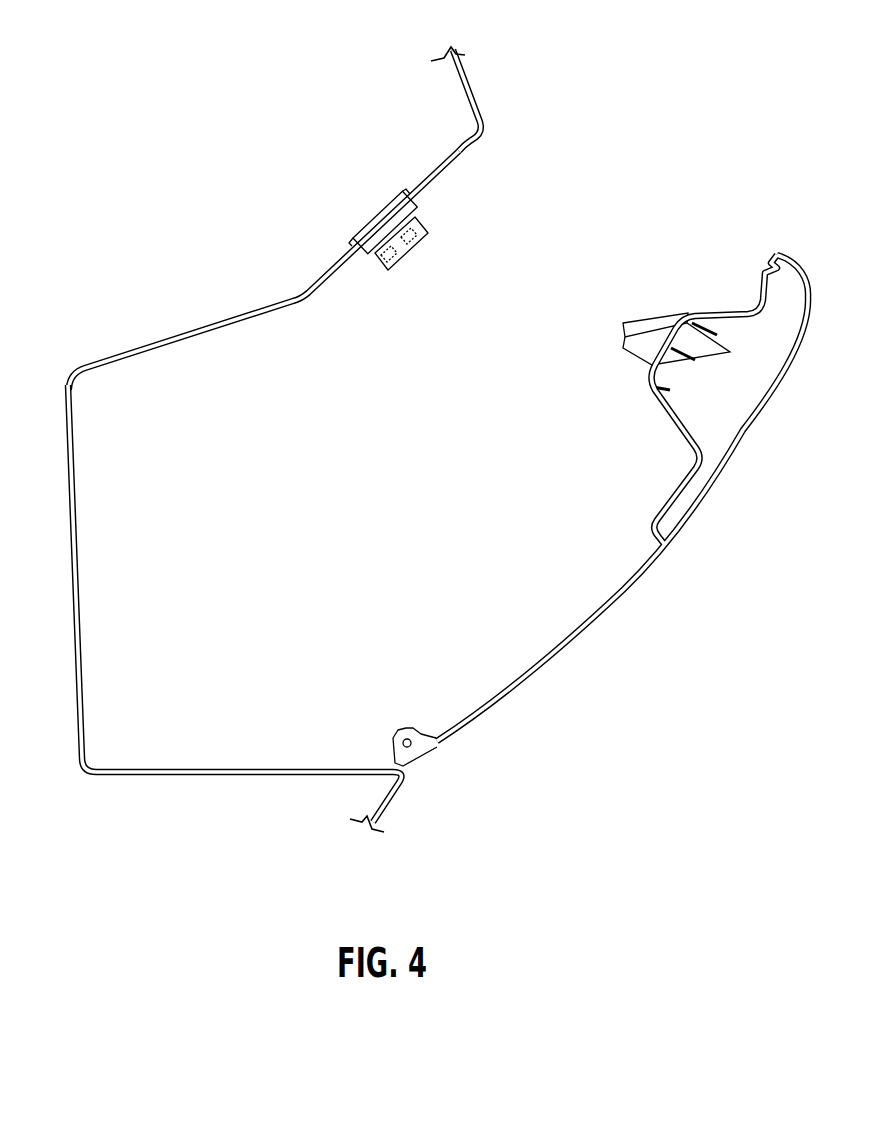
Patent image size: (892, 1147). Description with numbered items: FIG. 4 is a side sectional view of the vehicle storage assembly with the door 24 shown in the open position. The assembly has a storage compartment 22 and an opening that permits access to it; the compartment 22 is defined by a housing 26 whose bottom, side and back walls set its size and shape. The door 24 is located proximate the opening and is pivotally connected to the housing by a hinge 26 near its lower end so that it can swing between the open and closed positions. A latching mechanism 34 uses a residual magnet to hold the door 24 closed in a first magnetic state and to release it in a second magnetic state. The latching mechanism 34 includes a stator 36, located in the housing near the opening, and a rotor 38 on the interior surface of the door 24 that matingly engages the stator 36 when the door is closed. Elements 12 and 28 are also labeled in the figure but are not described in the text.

The wire retainer 12 is at (470, 84).
The storage compartment 22 is at (212, 732).
The door 24 is at (620, 601).
The housing 26 is at (307, 292).
The mounting clip 28 is at (405, 740).
The latching mechanism 34 is at (424, 311).
The stator 36 is at (408, 253).
The rotor 38 is at (623, 328).